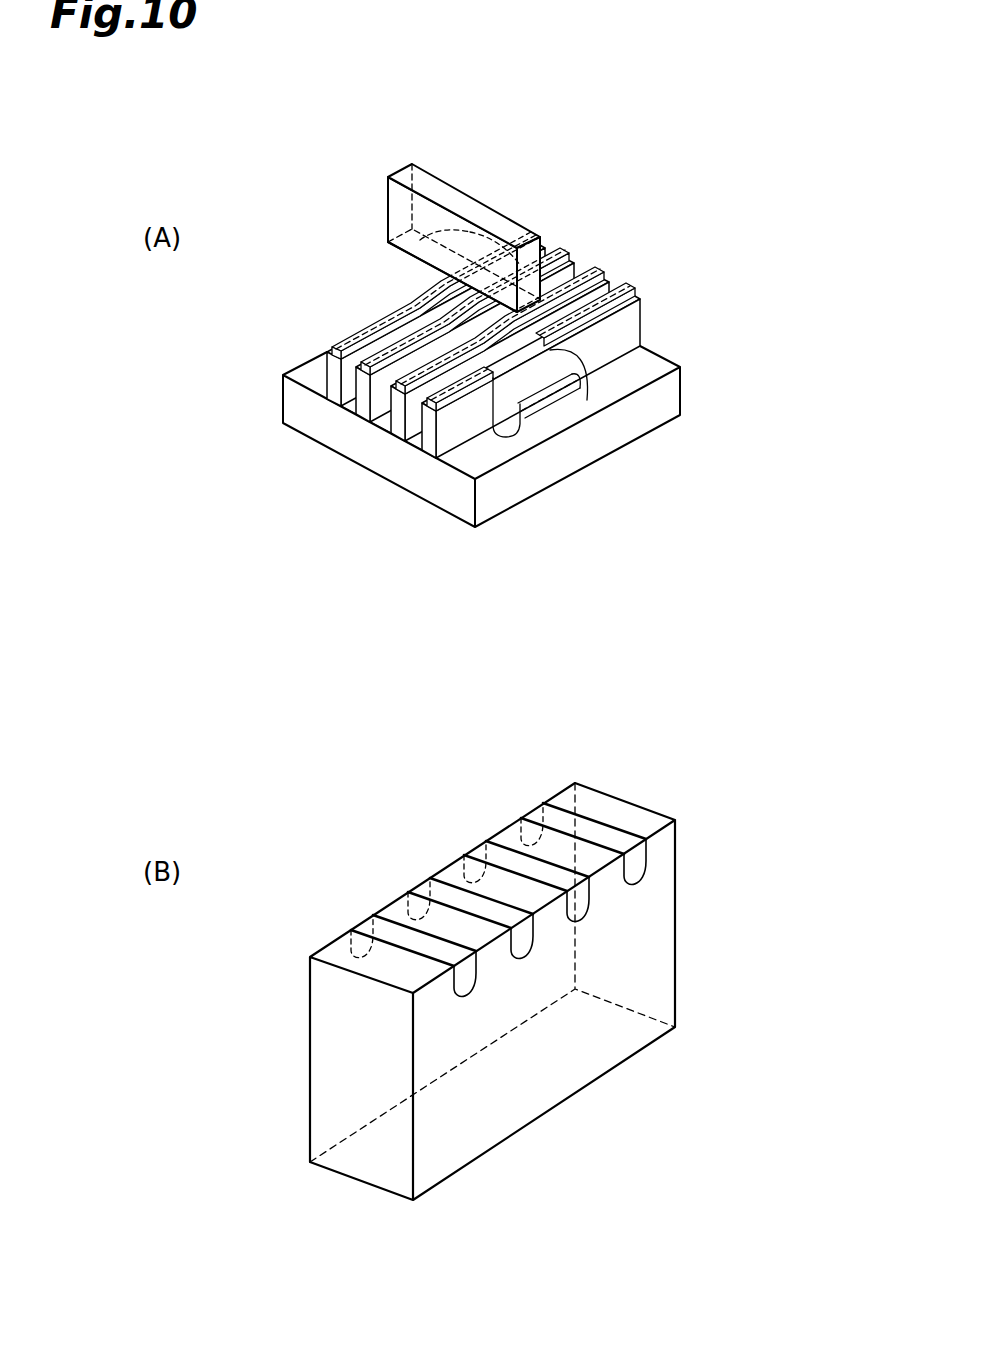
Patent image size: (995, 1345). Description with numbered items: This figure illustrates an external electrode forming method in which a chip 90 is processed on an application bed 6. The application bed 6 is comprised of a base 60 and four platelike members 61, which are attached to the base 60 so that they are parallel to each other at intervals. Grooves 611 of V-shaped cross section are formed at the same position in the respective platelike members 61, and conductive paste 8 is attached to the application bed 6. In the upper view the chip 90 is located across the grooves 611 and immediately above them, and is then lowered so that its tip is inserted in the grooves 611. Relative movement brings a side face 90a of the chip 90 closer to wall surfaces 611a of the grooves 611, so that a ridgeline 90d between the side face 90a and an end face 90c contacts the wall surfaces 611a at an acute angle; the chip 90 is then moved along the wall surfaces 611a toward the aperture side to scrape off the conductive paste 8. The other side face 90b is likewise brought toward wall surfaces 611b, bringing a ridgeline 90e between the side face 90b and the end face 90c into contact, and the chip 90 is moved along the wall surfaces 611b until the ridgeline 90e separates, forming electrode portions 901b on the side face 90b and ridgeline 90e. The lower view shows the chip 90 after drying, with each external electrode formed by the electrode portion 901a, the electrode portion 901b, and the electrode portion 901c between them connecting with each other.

The application bed 6 is at (520, 400).
The base 60 is at (602, 447).
The platelike members 61 is at (358, 408).
The grooves of V-shaped cross section 611 is at (575, 352).
The wall surfaces of the grooves 611a is at (522, 412).
The wall surfaces of the grooves 611b is at (596, 385).
The conductive paste 8 is at (548, 408).
The chip 90 is at (495, 651).
The side face of the chip 90a is at (425, 222).
The side face of the chip 90b is at (460, 208).
The end face of the chip 90c is at (433, 264).
The ridgeline 90d is at (397, 246).
The ridgeline 90e is at (496, 238).
The electrode portion 901a is at (592, 900).
The electrode portion 901b is at (521, 822).
The electrode portion 901c is at (557, 872).